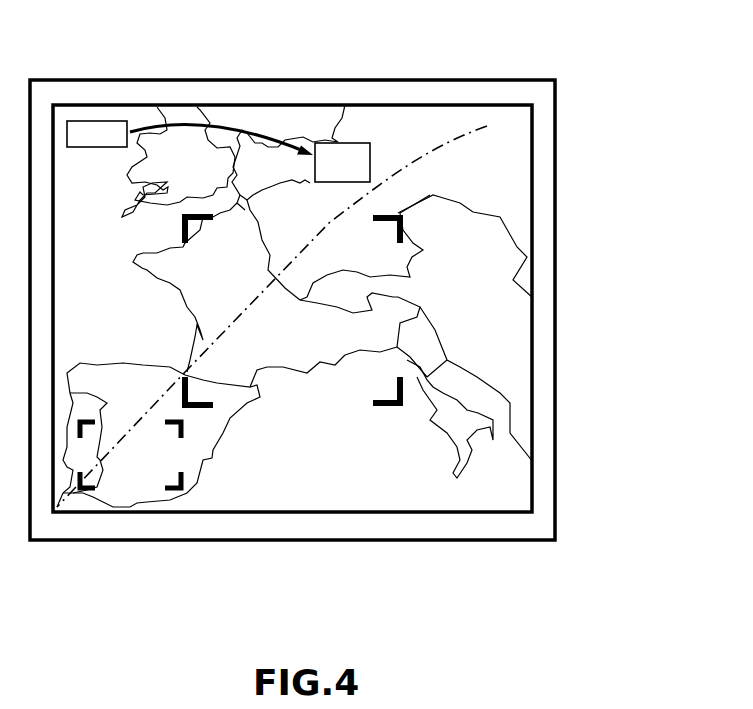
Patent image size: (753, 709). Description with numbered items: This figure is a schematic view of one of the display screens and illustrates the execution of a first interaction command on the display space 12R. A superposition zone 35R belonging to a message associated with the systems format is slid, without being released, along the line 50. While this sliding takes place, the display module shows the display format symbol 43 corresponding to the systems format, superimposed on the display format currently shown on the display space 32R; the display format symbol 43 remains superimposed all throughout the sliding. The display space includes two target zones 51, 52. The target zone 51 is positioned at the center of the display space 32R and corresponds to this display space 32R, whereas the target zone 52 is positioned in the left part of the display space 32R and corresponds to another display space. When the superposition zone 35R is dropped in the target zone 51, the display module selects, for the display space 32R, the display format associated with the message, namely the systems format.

The display space 12R is at (581, 58).
The display space 32R is at (78, 541).
The superposition zone 35R is at (93, 120).
The display format symbol 43 is at (342, 162).
The line 50 is at (250, 112).
The target zone 51 is at (318, 388).
The target zone 52 is at (170, 452).